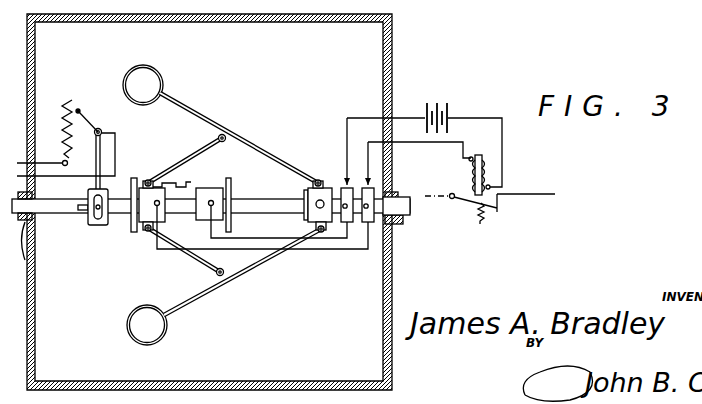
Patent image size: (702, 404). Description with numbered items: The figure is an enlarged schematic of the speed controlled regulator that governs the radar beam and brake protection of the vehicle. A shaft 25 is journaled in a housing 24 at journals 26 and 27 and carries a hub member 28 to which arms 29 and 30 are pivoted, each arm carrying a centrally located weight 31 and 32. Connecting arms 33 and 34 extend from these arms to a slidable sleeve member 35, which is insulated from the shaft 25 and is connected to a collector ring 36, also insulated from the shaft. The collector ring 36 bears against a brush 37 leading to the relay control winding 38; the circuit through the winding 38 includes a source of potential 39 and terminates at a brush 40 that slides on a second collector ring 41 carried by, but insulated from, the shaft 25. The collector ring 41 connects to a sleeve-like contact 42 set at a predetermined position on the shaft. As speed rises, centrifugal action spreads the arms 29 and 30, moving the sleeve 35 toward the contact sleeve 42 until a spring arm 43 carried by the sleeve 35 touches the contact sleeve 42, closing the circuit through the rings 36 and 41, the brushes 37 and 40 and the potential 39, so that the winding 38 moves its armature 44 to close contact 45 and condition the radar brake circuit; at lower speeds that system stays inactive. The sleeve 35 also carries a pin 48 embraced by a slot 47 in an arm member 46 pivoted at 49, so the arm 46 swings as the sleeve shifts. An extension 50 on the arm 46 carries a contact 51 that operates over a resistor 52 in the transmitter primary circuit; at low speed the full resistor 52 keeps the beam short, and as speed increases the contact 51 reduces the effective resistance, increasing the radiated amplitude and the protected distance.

The housing 24 is at (395, 34).
The shaft 25 is at (63, 206).
The journal 26 is at (30, 232).
The journal 27 is at (398, 224).
The hub member 28 is at (316, 178).
The arm 29 is at (194, 108).
The arm 30 is at (200, 297).
The weight 31 is at (146, 78).
The weight 32 is at (149, 339).
The connecting arm 33 is at (213, 135).
The connecting arm 34 is at (197, 261).
The slidable sleeve member 35 is at (146, 225).
The collector ring 36 is at (366, 214).
The brush 37 is at (400, 195).
The relay control winding 38 is at (486, 172).
The source of potential 39 is at (455, 101).
The brush 40 is at (344, 183).
The collector ring 41 is at (345, 210).
The contact sleeve 42 is at (207, 189).
The spring arm 43 is at (177, 182).
The armature 44 is at (492, 218).
The contact 45 is at (500, 201).
The arm member 46 is at (101, 162).
The slot 47 is at (116, 223).
The pin 48 is at (91, 208).
The pivot 49 is at (115, 119).
The extension 50 is at (87, 106).
The contact 51 is at (78, 106).
The resistor 52 is at (53, 114).